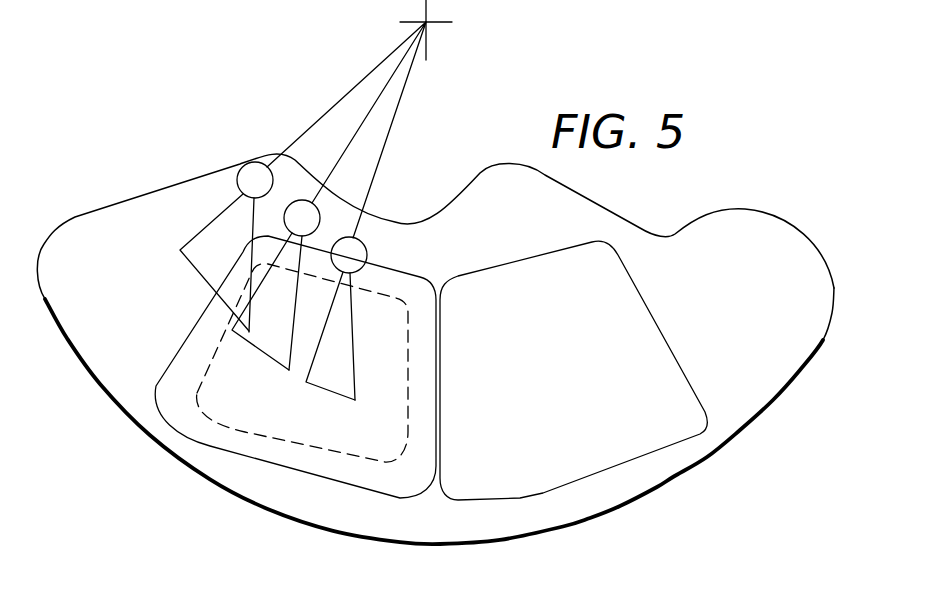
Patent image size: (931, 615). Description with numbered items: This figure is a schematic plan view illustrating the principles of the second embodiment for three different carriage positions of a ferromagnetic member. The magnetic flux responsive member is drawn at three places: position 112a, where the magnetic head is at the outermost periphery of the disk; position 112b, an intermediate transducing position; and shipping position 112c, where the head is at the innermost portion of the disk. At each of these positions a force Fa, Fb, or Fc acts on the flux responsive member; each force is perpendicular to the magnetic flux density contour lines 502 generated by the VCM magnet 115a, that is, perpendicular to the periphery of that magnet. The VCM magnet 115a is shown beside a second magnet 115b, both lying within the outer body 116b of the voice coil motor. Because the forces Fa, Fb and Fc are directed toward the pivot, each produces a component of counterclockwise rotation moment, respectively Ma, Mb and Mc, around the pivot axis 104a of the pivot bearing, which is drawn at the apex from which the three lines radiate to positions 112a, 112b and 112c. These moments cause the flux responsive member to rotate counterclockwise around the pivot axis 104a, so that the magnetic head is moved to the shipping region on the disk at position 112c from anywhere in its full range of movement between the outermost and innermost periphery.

The pivot axis 104a is at (432, 26).
The outermost position of magnetic flux responsive member 112a is at (236, 167).
The intermediate position of magnetic flux responsive member 112b is at (315, 203).
The shipping position of magnetic flux responsive member 112c is at (367, 252).
The force at outermost position Fa is at (250, 220).
The force at intermediate position Fb is at (296, 294).
The force at shipping position Fc is at (355, 362).
The counterclockwise rotation moment force at outermost position Ma is at (201, 277).
The counterclockwise rotation moment force at intermediate position Mb is at (275, 360).
The counterclockwise rotation moment force at shipping position Mc is at (322, 389).
The VCM magnet 115a is at (217, 452).
The magnet 115b is at (547, 493).
The yoke 116b is at (745, 380).
The magnetic flux density contour lines 502 is at (388, 463).